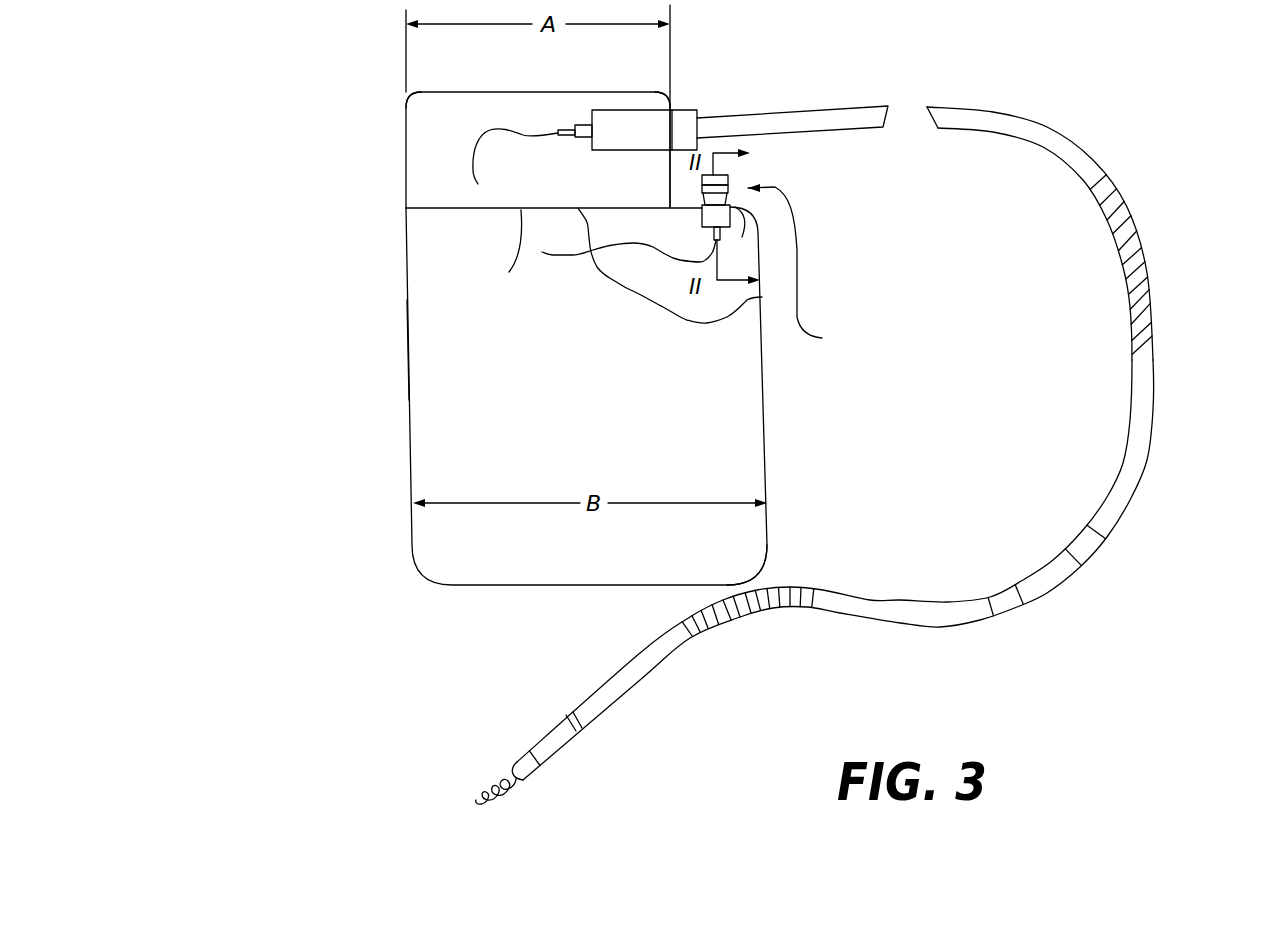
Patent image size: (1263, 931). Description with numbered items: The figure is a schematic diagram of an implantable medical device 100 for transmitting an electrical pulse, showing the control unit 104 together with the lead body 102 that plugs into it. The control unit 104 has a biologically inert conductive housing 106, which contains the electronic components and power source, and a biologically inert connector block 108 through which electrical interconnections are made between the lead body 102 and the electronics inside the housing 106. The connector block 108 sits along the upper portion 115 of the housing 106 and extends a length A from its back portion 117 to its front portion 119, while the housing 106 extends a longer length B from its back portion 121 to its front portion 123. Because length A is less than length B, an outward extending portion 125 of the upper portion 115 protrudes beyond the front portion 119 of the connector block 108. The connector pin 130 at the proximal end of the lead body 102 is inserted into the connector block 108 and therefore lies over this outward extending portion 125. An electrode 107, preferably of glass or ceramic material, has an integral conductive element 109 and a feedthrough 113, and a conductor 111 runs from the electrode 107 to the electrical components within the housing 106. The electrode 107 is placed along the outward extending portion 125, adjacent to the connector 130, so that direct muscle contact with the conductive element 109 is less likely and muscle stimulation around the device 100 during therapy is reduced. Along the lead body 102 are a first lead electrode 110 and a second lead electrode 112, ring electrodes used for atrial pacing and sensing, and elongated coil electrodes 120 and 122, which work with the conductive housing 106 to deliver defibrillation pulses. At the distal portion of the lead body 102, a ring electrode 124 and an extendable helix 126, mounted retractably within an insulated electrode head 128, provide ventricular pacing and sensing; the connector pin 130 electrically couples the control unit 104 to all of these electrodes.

The implantable medical device 100 is at (128, 247).
The lead body 102 is at (972, 118).
The control unit 104 is at (368, 212).
The conductive housing 106 is at (425, 420).
The electrode 107 is at (805, 265).
The connector block 108 is at (423, 160).
The conductive element 109 is at (728, 180).
The first lead electrode 110 is at (1080, 553).
The conductor 111 is at (670, 260).
The second lead electrode 112 is at (1015, 603).
The feedthrough 113 is at (702, 212).
The upper portion 115 is at (496, 249).
The back portion 117 is at (405, 107).
The front portion 119 is at (670, 100).
The elongated coil electrode 120 is at (748, 617).
The back portion 121 is at (405, 350).
The elongated coil electrode 122 is at (1140, 257).
The front portion 123 is at (770, 537).
The ring electrode 124 is at (578, 727).
The outward extending portion 125 is at (736, 247).
The extendable helix 126 is at (475, 803).
The insulated electrode head 128 is at (515, 762).
The connector pin 130 is at (646, 150).